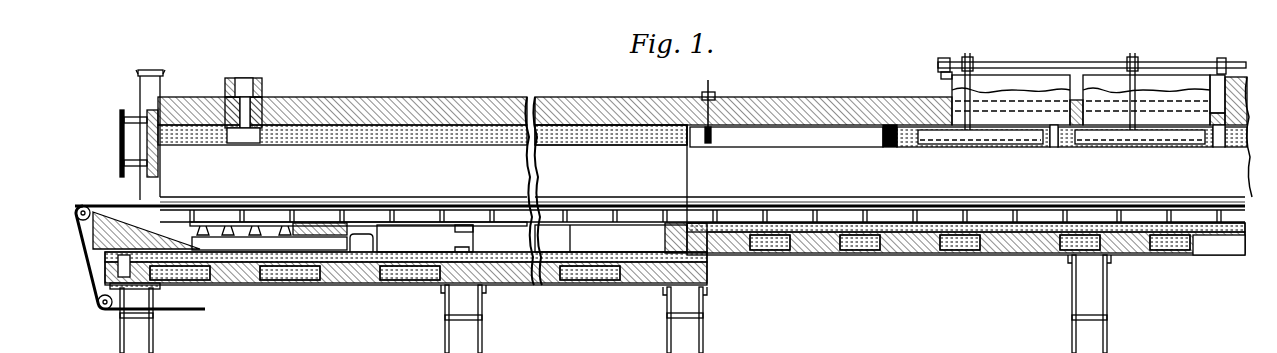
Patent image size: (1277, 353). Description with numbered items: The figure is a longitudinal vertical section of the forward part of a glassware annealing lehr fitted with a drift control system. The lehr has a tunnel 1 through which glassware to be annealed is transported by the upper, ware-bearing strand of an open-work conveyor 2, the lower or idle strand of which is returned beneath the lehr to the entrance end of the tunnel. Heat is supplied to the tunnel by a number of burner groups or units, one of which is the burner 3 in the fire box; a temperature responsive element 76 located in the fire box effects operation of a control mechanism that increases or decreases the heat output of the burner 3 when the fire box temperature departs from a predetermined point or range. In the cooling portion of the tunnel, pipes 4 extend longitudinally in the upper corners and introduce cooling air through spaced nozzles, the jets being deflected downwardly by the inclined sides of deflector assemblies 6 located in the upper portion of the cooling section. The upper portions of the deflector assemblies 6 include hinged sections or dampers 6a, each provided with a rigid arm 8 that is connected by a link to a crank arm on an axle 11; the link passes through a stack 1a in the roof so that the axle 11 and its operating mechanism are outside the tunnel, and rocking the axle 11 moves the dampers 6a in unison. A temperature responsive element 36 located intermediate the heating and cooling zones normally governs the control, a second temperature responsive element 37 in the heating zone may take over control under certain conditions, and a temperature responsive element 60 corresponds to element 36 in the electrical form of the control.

The tunnel 1 is at (136, 187).
The stack 1a is at (1047, 82).
The open-work conveyor 2 is at (832, 207).
The burner group 3 is at (362, 236).
The pipes 4 is at (1243, 147).
The deflector assembly 6 is at (929, 150).
The damper 6a is at (1000, 137).
The rigid arm 8 is at (966, 141).
The axle 11 is at (998, 62).
The temperature responsive element 36 is at (679, 150).
The second temperature responsive element 37 is at (200, 214).
The temperature responsive element 60 is at (710, 143).
The temperature responsive element 76 is at (268, 214).